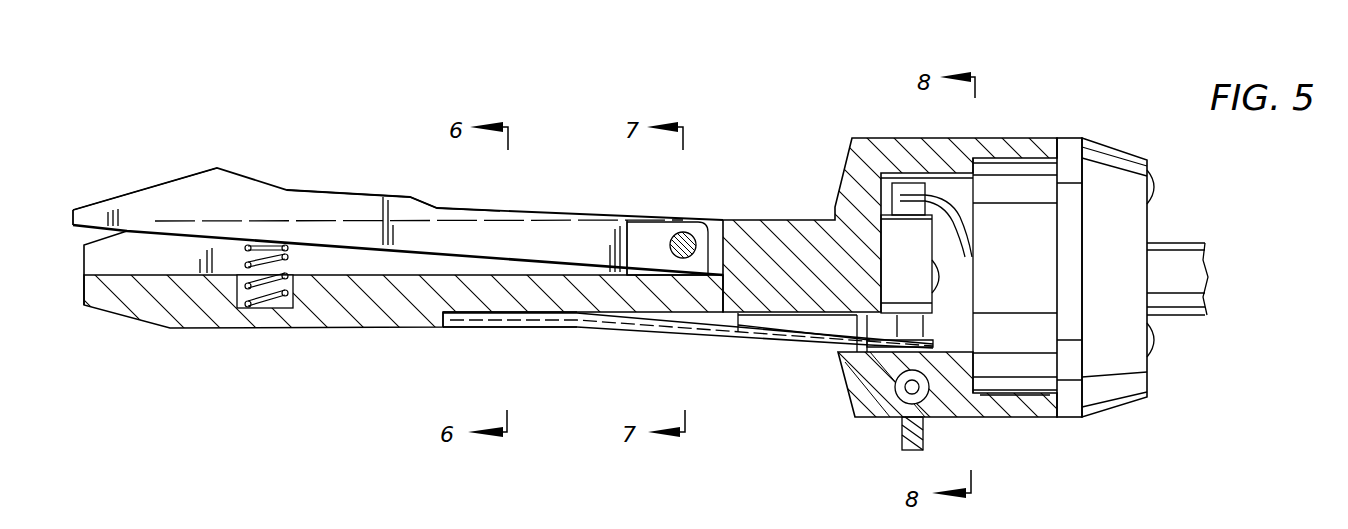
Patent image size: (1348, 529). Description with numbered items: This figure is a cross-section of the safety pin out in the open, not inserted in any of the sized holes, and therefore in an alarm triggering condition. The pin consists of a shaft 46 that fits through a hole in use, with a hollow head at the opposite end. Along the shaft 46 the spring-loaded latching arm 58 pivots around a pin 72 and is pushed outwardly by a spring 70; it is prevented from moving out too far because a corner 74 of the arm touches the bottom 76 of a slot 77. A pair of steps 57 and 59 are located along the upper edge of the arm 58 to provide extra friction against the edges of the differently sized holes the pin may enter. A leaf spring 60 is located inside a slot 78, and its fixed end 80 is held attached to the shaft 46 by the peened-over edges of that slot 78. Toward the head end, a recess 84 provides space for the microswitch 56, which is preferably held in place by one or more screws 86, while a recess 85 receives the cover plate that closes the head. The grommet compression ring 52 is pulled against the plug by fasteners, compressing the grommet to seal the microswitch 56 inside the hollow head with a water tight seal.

The shaft 46 is at (368, 310).
The grommet compression ring 52 is at (1118, 400).
The microswitch 56 is at (850, 157).
The step 57 is at (428, 200).
The latching arm 58 is at (347, 203).
The step 59 is at (248, 175).
The leaf spring 60 is at (852, 414).
The spring 70 is at (267, 308).
The pin 72 is at (683, 233).
The corner 74 is at (700, 278).
The bottom 76 is at (535, 272).
The slot 77 is at (150, 250).
The slot 78 is at (810, 322).
The fixed end 80 is at (490, 322).
The recess 84 is at (960, 177).
The recess 85 is at (1017, 397).
The screw 86 is at (943, 273).